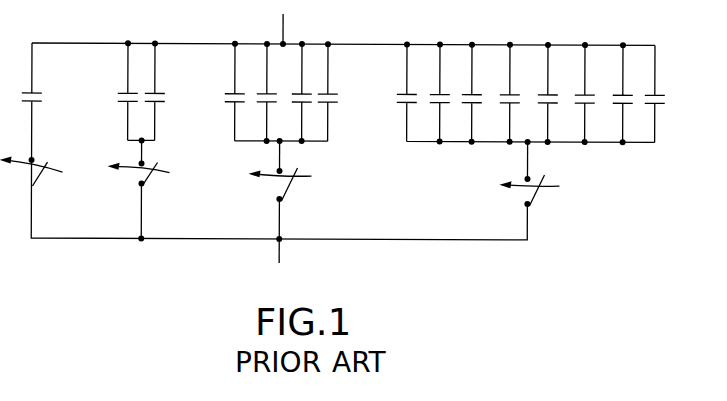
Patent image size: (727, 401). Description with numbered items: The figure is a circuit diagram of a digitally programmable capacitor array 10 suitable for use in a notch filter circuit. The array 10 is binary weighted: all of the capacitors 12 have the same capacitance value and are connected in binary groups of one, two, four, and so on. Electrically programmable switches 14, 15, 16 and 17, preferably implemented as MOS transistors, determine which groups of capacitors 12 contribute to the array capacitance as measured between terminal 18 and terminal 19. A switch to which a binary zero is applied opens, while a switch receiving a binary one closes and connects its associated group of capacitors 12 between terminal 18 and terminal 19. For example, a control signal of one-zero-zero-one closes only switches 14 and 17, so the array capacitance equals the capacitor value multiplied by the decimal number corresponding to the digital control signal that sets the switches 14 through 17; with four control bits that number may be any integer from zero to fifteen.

The digitally programmable capacitor array 10 is at (332, 156).
The capacitors 12 is at (151, 91).
The electrically programmable switch 14 is at (38, 186).
The electrically programmable switch 15 is at (148, 186).
The electrically programmable switch 16 is at (290, 190).
The electrically programmable switch 17 is at (536, 192).
The terminal 18 is at (284, 20).
The terminal 19 is at (281, 250).